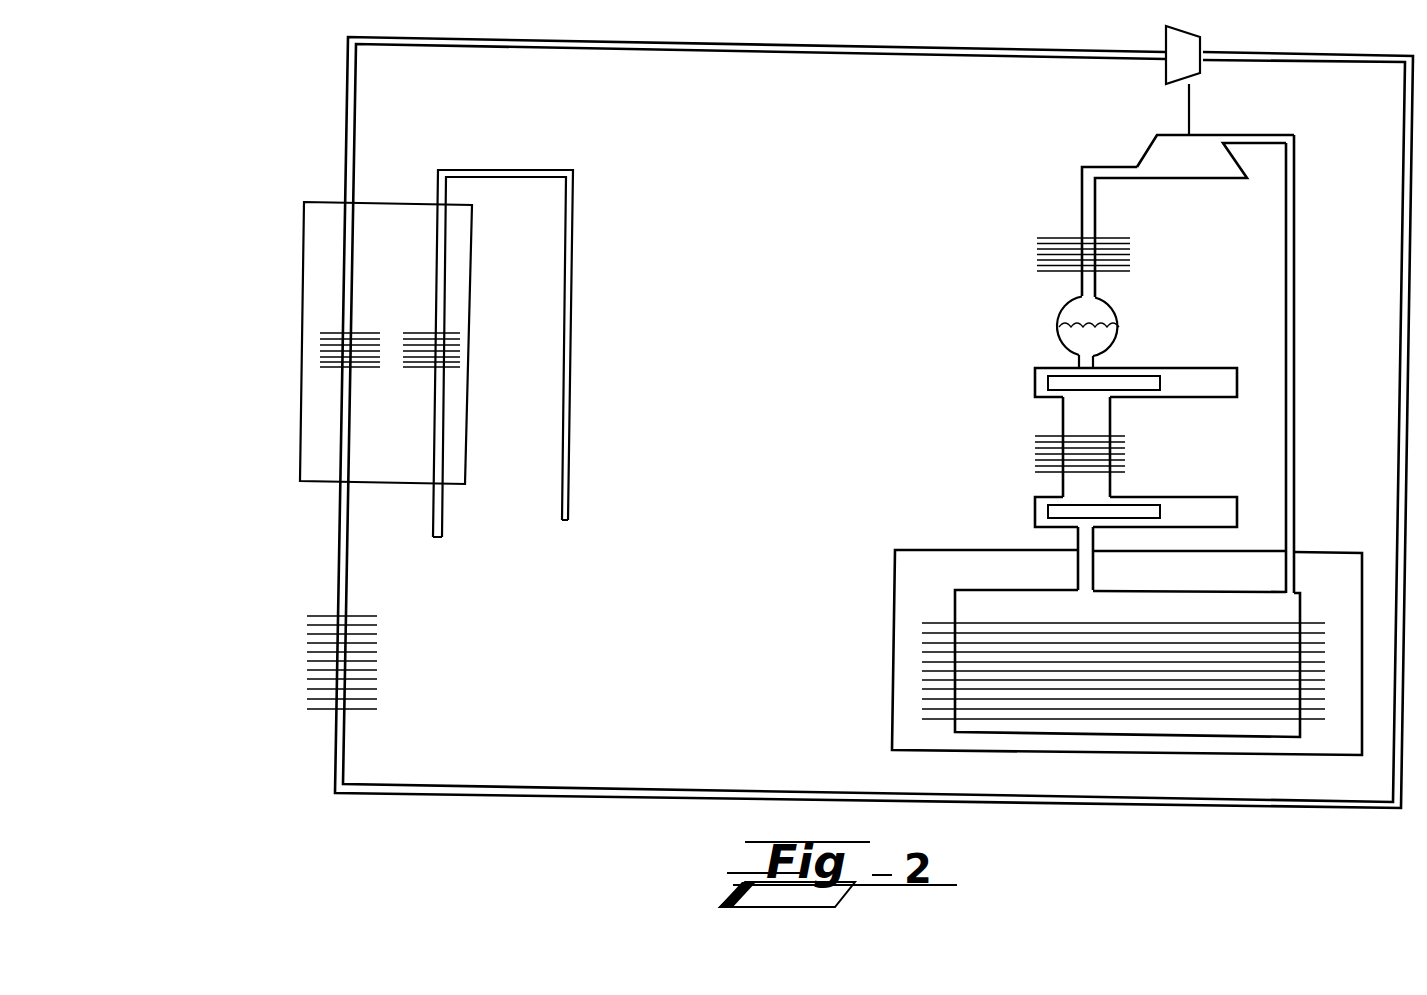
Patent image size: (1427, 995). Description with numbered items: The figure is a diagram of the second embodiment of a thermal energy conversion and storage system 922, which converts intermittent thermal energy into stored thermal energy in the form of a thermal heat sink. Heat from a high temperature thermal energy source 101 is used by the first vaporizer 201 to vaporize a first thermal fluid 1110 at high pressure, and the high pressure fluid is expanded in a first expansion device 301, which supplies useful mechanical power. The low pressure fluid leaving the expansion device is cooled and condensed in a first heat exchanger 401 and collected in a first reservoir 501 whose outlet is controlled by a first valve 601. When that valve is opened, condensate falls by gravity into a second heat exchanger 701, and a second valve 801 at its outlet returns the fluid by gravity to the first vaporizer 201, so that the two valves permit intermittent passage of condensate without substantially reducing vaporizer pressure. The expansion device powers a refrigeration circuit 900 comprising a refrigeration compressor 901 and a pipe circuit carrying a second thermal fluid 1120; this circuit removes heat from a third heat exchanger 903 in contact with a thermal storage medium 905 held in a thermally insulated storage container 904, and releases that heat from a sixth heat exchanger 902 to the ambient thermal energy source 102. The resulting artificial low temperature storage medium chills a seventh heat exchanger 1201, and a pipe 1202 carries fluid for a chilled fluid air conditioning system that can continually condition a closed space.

The heat engine system 922 is at (310, 137).
The refrigeration circuit 900 is at (873, 793).
The ambient thermal energy source 102 is at (555, 700).
The refrigeration compressor 901 is at (1195, 75).
The first expansion device 301 is at (1183, 180).
The second thermal fluid 1120 is at (1400, 143).
The first heat exchanger 401 is at (1130, 255).
The first reservoir 501 is at (1117, 335).
The first thermal fluid 1110 is at (1060, 343).
The first valve 601 is at (1182, 397).
The second heat exchanger 701 is at (1035, 452).
The second valve 801 is at (1158, 497).
The high temperature thermal energy source 101 is at (1335, 567).
The first vaporizer 201 is at (927, 642).
The thermally insulated storage container 904 is at (303, 270).
The third heat exchanger 903 is at (327, 347).
The thermal storage medium 905 is at (328, 427).
The sixth heat exchanger 902 is at (310, 651).
The pipe 1202 is at (507, 170).
The seventh heat exchanger 1201 is at (450, 334).